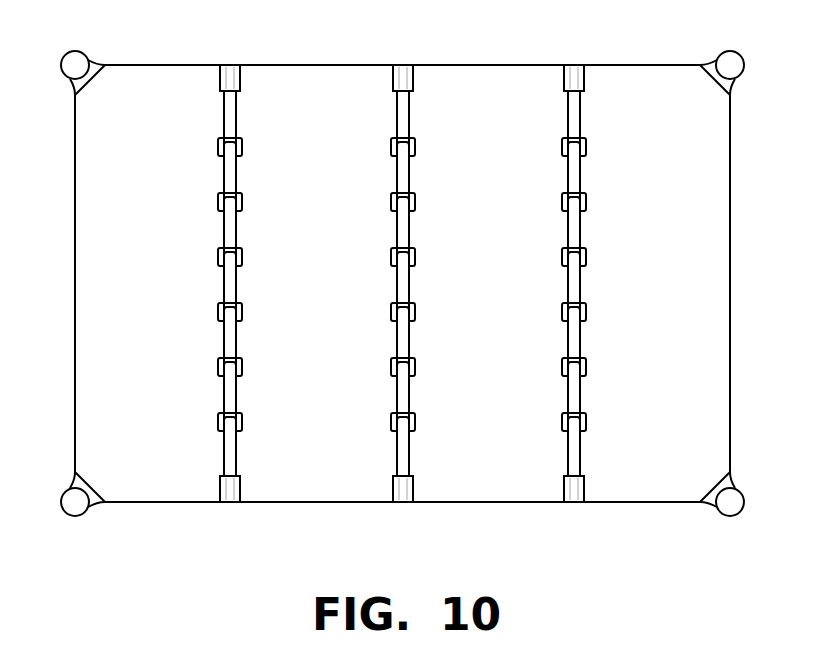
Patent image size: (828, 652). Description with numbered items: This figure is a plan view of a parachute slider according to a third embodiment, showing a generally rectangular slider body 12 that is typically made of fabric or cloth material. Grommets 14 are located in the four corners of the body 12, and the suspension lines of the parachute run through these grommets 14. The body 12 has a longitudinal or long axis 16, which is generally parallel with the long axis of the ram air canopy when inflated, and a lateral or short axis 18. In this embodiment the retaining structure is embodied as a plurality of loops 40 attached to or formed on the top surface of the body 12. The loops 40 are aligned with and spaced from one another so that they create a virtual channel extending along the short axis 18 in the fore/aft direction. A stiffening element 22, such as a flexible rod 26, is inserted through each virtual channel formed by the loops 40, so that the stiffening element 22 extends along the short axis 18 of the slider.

The slider body 12 is at (463, 88).
The grommets 14 is at (744, 60).
The longitudinal axis 16 is at (478, 502).
The short axis 18 is at (730, 355).
The stiffening element 22 is at (224, 287).
The flexible rod 26 is at (582, 232).
The loops 40 is at (243, 145).